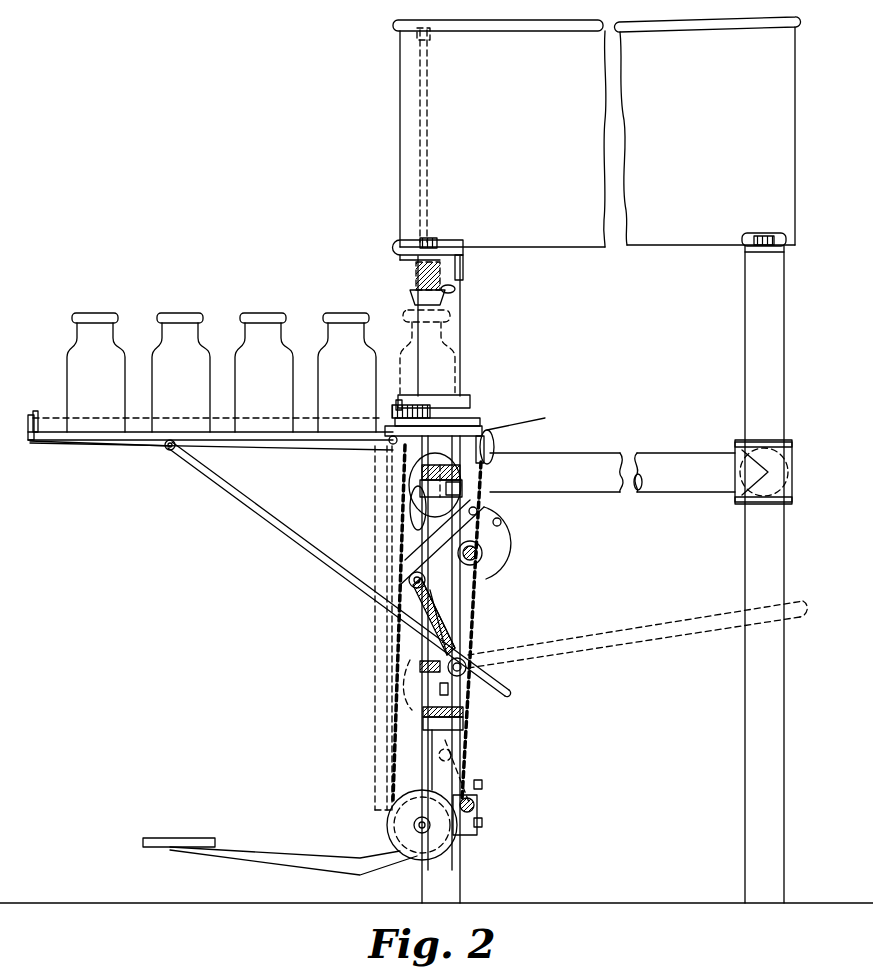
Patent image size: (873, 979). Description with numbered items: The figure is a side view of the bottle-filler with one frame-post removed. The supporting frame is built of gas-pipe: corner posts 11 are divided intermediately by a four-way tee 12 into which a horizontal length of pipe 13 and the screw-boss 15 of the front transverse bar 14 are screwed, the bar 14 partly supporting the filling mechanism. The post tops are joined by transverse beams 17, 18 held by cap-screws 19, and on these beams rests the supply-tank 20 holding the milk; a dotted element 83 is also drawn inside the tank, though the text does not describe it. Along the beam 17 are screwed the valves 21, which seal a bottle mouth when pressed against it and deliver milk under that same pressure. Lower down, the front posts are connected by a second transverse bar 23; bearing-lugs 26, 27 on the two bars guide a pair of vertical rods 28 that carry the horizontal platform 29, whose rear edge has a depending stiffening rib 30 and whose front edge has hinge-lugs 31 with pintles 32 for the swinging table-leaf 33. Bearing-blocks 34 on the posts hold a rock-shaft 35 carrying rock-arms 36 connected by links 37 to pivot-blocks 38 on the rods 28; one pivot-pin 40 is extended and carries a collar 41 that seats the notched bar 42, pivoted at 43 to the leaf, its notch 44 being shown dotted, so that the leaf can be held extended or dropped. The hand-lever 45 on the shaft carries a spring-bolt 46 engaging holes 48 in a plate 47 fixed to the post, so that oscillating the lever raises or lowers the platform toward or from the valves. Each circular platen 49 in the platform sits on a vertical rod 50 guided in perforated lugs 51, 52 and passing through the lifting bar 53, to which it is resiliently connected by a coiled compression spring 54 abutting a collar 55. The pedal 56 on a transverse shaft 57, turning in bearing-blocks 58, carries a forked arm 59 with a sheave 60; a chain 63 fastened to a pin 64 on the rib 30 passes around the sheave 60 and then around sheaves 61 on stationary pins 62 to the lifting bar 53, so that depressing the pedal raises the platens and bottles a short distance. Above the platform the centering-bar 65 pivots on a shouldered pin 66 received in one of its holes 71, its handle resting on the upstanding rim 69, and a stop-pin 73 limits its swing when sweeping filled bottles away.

The corner post 11 is at (452, 300).
The four-way tee 12 is at (786, 463).
The horizontal length of pipe 13 is at (672, 454).
The transverse bar 14 is at (417, 473).
The screw-boss 15 is at (443, 456).
The transverse beam 17 is at (396, 248).
The transverse beam 18 is at (745, 252).
The cap-screw 19 is at (760, 237).
The supply-tank 20 is at (707, 131).
The valve 21 is at (410, 297).
The second transverse bar 23 is at (464, 712).
The bearing-lug 26 is at (461, 492).
The bearing-lug 27 is at (465, 723).
The vertical rod 28 is at (462, 773).
The horizontal platform 29 is at (480, 436).
The stiffening rib 30 is at (493, 446).
The hinge-lug 31 is at (389, 445).
The pintle 32 is at (381, 430).
The table-leaf 33 is at (50, 449).
The bearing-block 34 is at (468, 589).
The rock-shaft 35 is at (483, 559).
The rock-arm 36 is at (423, 578).
The link 37 is at (447, 638).
The pivot-block 38 is at (443, 688).
The pivot-pin 40 is at (466, 666).
The collar 41 is at (462, 673).
The notched bar 42 is at (316, 553).
The pivot 43 is at (168, 451).
The notch 44 is at (755, 626).
The hand-lever 45 is at (526, 419).
The spring-bolt 46 is at (478, 511).
The plate 47 is at (496, 546).
The hole 48 is at (502, 522).
The circular platen 49 is at (472, 404).
The vertical rod 50 is at (422, 856).
The perforated lug 51 is at (418, 487).
The perforated lug 52 is at (430, 728).
The lifting bar 53 is at (411, 685).
The coiled compression spring 54 is at (420, 665).
The collar 55 is at (440, 593).
The pedal 56 is at (228, 848).
The transverse shaft 57 is at (476, 806).
The bearing-block 58 is at (474, 832).
The forked arm 59 is at (443, 836).
The sheave 60 is at (387, 828).
The sheave 61 is at (413, 525).
The stationary pin 62 is at (417, 505).
The chain 63 is at (467, 648).
The pin 64 is at (487, 459).
The centering-bar 65 is at (455, 396).
The shouldered pin 66 is at (407, 405).
The upstanding rim 69 is at (45, 421).
The hole 71 is at (398, 404).
The stop-pin 73 is at (19, 427).
The pipe 83 is at (430, 143).